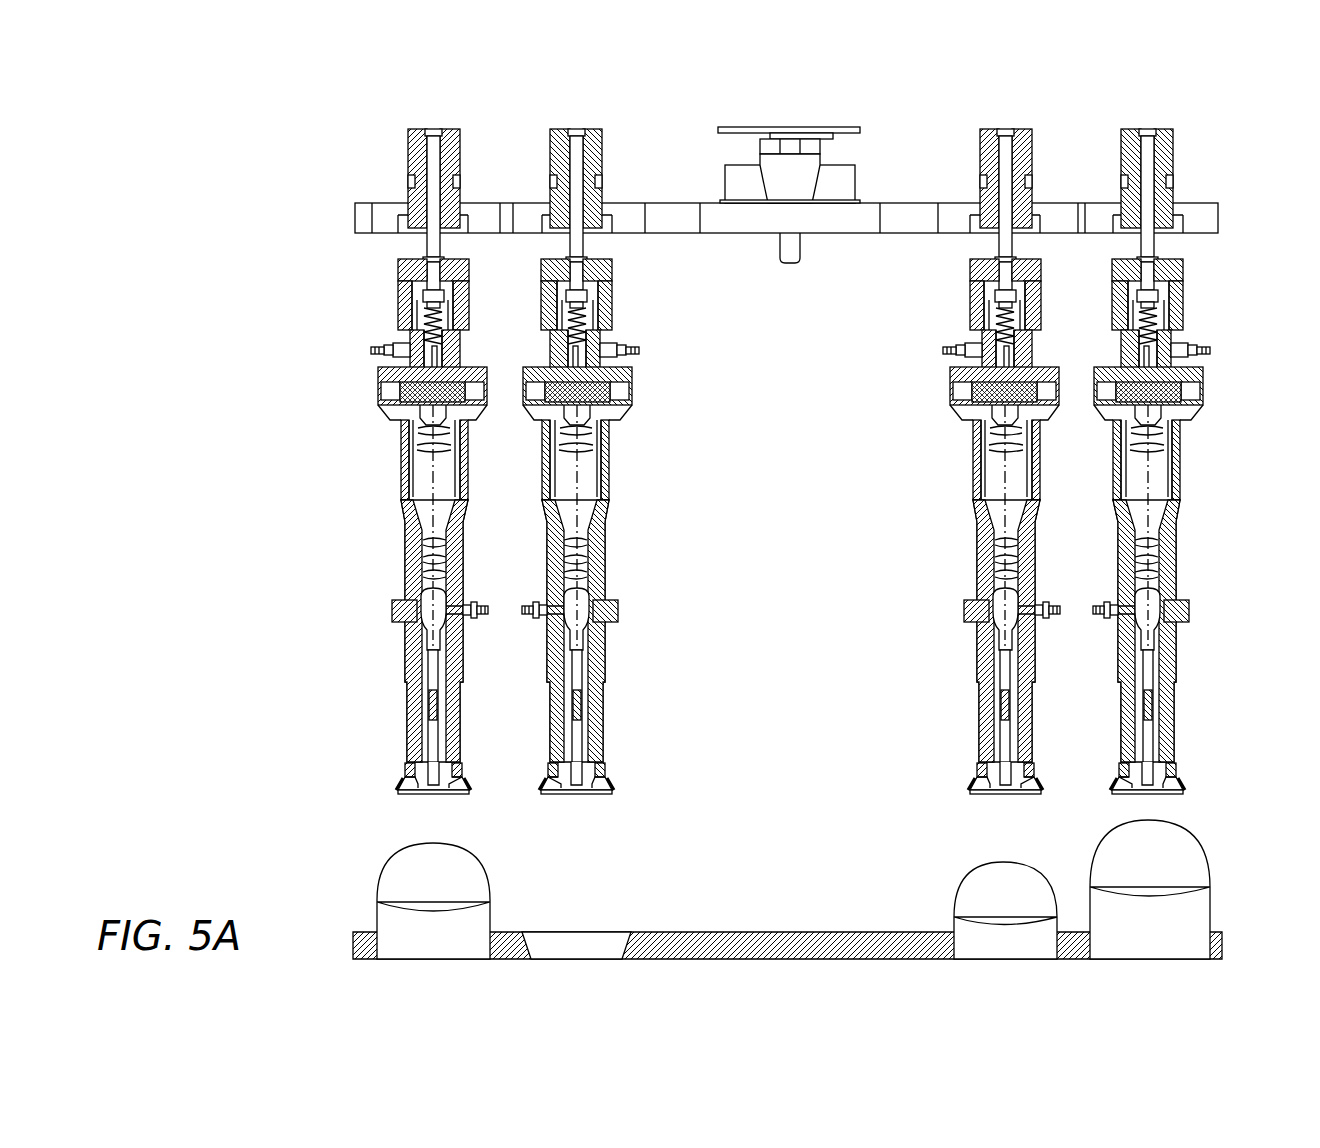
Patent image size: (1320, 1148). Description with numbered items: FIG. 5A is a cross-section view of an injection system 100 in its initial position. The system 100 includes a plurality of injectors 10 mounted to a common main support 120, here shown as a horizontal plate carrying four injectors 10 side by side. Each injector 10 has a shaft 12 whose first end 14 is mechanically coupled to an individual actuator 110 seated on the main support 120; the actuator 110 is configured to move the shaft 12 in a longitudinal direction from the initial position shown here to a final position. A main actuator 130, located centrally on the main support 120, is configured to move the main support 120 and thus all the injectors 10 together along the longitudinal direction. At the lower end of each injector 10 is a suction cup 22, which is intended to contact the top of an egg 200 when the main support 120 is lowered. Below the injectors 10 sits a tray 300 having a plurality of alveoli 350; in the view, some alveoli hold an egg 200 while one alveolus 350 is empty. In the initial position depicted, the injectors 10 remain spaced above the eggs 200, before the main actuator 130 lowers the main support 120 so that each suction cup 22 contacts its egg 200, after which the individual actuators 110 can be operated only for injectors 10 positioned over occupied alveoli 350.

The system 100 is at (951, 104).
The injector 10 is at (787, 462).
The shaft 12 is at (468, 488).
The first end 14 is at (443, 330).
The suction cup 22 is at (403, 788).
The actuator 110 is at (437, 175).
The main support 120 is at (912, 212).
The main actuator 130 is at (804, 127).
The egg 200 is at (385, 878).
The tray 300 is at (829, 915).
The alveolus 350 is at (578, 940).